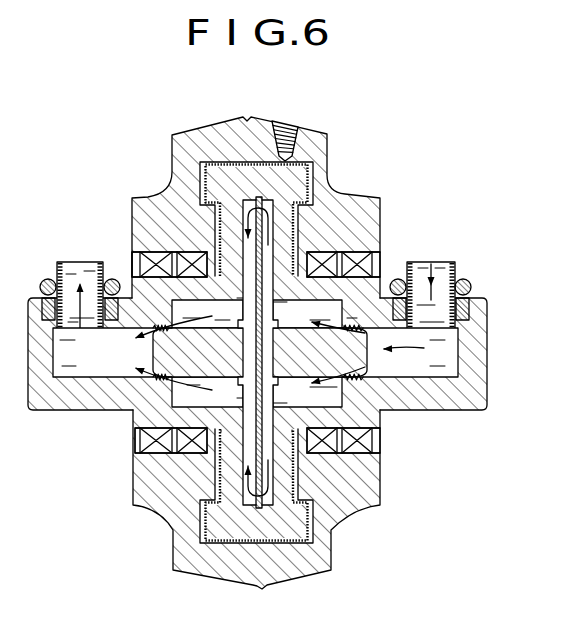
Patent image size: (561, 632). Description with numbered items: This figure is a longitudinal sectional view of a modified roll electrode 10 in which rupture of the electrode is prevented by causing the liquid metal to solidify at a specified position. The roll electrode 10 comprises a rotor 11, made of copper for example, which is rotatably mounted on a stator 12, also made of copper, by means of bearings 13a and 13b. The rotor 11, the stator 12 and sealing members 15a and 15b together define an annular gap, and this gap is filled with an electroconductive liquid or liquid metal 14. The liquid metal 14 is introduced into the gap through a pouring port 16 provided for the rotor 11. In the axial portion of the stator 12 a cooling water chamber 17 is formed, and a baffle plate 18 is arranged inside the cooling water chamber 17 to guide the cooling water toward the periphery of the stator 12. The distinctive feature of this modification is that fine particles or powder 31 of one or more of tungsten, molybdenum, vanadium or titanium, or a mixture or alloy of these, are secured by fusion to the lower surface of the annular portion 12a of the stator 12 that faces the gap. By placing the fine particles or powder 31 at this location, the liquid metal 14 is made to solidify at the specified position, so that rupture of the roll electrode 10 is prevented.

The roll electrode 10 is at (398, 183).
The rotor 11 is at (174, 200).
The stator 12 is at (472, 388).
The annular portion 12a is at (297, 525).
The bearing 13a is at (372, 257).
The bearing 13b is at (145, 265).
The liquid metal 14 is at (202, 171).
The sealing member 15a is at (350, 234).
The sealing member 15b is at (193, 253).
The pouring port 16 is at (290, 128).
The cooling water chamber 17 is at (447, 348).
The baffle plate 18 is at (278, 202).
The fine particles or powder 31 is at (238, 542).